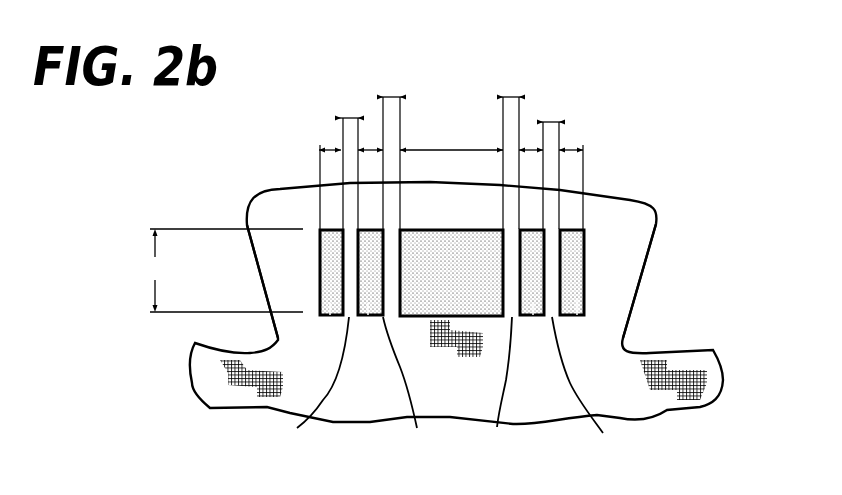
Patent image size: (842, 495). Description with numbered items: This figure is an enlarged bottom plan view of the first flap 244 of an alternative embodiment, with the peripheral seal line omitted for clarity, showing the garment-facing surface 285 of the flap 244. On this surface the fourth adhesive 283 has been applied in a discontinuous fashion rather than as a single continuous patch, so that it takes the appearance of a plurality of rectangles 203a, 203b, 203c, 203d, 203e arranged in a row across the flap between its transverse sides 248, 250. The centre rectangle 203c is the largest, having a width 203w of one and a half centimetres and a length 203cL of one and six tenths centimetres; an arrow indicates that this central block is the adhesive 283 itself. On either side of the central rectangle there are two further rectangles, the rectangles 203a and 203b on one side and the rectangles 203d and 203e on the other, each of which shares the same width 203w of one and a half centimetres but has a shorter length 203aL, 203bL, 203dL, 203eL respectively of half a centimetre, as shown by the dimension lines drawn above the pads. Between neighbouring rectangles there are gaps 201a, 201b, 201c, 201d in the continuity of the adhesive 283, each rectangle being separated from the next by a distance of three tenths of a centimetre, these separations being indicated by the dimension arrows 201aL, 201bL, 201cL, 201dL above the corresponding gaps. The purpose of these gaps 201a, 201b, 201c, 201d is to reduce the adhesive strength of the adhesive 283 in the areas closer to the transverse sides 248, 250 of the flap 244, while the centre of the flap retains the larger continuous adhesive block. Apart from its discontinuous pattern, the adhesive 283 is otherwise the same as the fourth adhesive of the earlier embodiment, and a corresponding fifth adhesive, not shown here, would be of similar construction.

The flap 244 is at (695, 197).
The transverse side 248 is at (647, 282).
The transverse side 250 is at (256, 271).
The garment-facing surface 285 is at (473, 386).
The fourth adhesive 283 is at (466, 222).
The rectangle 203a is at (330, 303).
The rectangle 203b is at (368, 303).
The centre rectangle 203c is at (480, 279).
The rectangle 203d is at (533, 303).
The rectangle 203e is at (577, 300).
The gap 201a is at (297, 428).
The gap 201b is at (417, 428).
The gap 201c is at (497, 427).
The gap 201d is at (603, 433).
The width 203w is at (215, 270).
The length 203aL is at (331, 149).
The length 203bL is at (371, 148).
The length 203cL is at (458, 148).
The length 203dL is at (532, 148).
The length 203eL is at (574, 148).
The gap length 201aL is at (349, 117).
The gap length 201bL is at (392, 96).
The gap length 201cL is at (511, 96).
The gap length 201dL is at (550, 121).